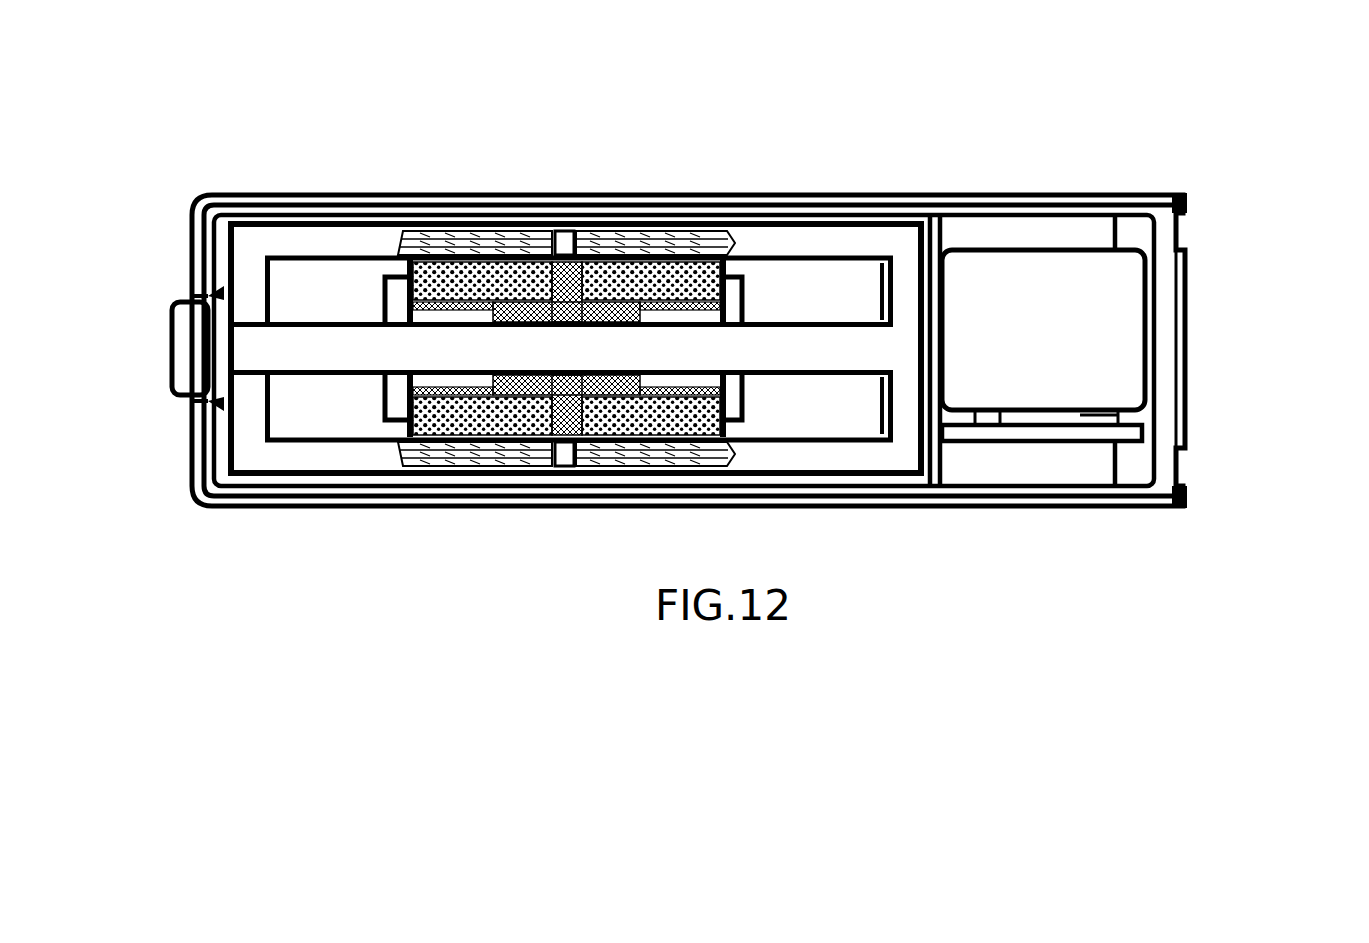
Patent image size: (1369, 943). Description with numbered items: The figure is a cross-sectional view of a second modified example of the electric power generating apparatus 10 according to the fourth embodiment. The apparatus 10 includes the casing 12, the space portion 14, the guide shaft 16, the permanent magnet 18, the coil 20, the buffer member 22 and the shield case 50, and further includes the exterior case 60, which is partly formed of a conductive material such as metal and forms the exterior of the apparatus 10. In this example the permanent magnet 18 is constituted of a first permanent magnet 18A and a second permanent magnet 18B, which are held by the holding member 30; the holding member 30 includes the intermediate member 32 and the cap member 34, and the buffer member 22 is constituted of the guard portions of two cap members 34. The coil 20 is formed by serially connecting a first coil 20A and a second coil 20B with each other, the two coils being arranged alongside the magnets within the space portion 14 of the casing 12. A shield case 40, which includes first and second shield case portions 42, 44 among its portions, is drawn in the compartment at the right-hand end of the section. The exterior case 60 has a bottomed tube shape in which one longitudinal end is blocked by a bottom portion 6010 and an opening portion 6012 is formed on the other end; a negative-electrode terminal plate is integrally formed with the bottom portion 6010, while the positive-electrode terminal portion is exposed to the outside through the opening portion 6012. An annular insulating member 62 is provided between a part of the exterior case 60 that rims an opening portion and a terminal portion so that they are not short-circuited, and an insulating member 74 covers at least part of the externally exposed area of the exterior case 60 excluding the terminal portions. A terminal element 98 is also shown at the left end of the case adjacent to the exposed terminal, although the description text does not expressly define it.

The electric power generating apparatus 10 is at (752, 118).
The casing 12 is at (802, 452).
The space portion 14 is at (277, 420).
The guide shaft 16 is at (312, 372).
The permanent magnet 18 is at (470, 293).
The first permanent magnet 18A is at (393, 271).
The second permanent magnet 18B is at (745, 258).
The coil 20 is at (542, 296).
The first coil 20A is at (473, 222).
The second coil 20B is at (638, 222).
The buffer member 22 is at (563, 348).
The holding member 30 is at (374, 414).
The intermediate member 32 is at (566, 470).
The cap member 34 is at (747, 303).
The shield case 40 is at (1063, 297).
The first shield case portion 42 is at (1043, 330).
The second shield case portion 44 is at (1043, 330).
The shield case 50 is at (826, 240).
The exterior case 60 is at (171, 352).
The annular insulating member 62 is at (1188, 340).
The insulating member 74 is at (1160, 193).
The terminal 98 is at (212, 296).
The bottom portion 6010 is at (1188, 405).
The opening portion 6012 is at (245, 292).